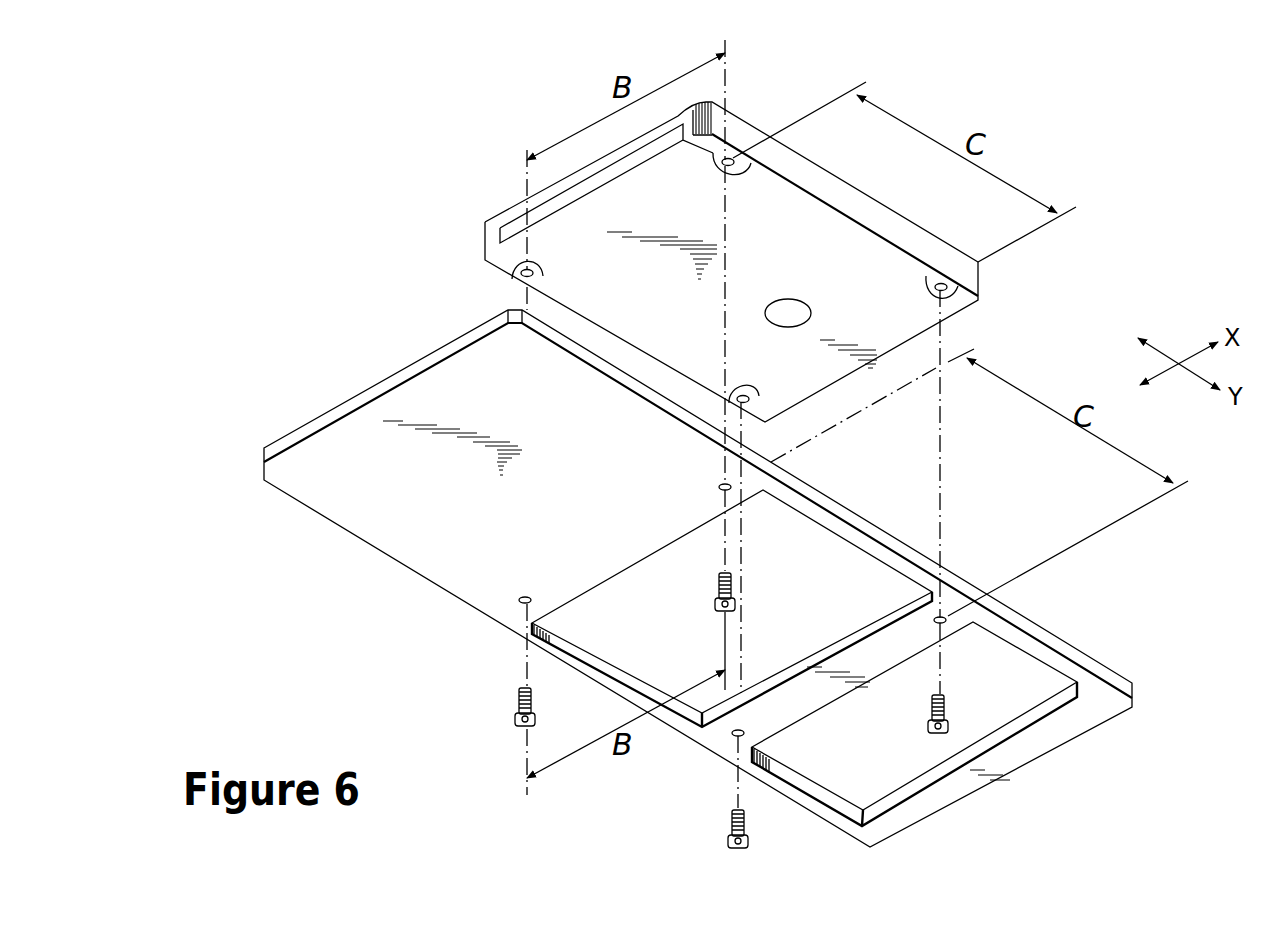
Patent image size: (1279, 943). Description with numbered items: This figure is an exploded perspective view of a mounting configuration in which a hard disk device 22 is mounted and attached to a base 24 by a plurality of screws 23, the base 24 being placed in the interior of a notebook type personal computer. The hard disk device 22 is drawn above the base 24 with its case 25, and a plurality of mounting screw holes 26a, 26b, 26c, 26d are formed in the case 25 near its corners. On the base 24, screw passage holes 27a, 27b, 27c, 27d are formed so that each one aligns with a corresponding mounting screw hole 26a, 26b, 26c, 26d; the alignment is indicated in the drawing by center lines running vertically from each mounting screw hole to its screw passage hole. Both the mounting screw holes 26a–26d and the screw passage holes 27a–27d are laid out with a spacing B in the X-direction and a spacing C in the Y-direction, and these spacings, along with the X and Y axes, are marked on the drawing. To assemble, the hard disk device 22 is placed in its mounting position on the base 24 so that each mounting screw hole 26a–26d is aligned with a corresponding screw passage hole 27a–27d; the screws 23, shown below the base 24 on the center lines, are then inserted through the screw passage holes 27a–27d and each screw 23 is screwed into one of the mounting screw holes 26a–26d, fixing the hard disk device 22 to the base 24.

The hard disk device 22 is at (470, 212).
The screws 23 is at (718, 590).
The base 24 is at (300, 414).
The case 25 is at (923, 245).
The mounting screw hole 26a is at (727, 166).
The mounting screw hole 26b is at (524, 275).
The mounting screw hole 26c is at (937, 289).
The mounting screw hole 26d is at (746, 402).
The screw passage hole 27a is at (722, 488).
The screw passage hole 27b is at (518, 600).
The screw passage hole 27c is at (935, 620).
The screw passage hole 27d is at (736, 737).